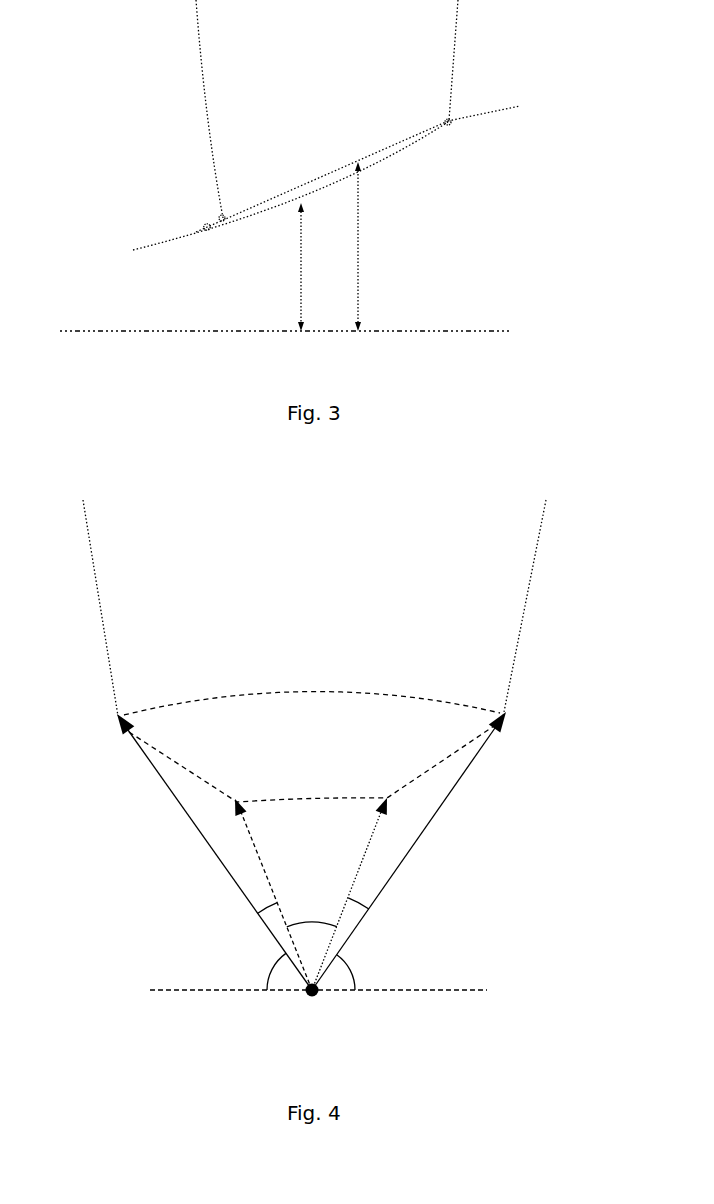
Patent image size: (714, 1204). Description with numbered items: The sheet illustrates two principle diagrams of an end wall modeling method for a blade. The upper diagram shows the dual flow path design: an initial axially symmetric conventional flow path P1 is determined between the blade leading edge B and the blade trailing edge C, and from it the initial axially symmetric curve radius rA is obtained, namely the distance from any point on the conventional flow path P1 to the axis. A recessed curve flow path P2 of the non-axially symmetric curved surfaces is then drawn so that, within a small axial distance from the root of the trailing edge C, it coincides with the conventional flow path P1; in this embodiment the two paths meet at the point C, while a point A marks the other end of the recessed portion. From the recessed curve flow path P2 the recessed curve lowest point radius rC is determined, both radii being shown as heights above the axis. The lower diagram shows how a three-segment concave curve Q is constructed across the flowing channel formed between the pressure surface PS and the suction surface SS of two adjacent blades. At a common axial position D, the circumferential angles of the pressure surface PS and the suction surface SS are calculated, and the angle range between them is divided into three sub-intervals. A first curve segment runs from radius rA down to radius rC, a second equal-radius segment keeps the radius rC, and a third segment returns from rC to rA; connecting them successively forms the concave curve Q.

In FIG. 3, the leading edge point of the camber line A is at (197, 219).
In FIG. 3, the blade leading edge B is at (216, 110).
In FIG. 3, the blade trailing edge C is at (458, 62).
In FIG. 3, the initial axially symmetric conventional flow path P1 is at (322, 176).
In FIG. 3, the recessed curve flow path P2 is at (397, 152).
In FIG. 3, the initial axially symmetric curve radius rA is at (372, 246).
In FIG. 4, the initial axially symmetric curve radius rA is at (311, 851).
In FIG. 3, the recessed curve lowest point radius rC is at (286, 267).
In FIG. 4, the recessed curve lowest point radius rC is at (311, 894).
In FIG. 4, the pressure surface PS is at (102, 610).
In FIG. 4, the suction surface SS is at (521, 632).
In FIG. 4, the concave curve Q is at (280, 800).
In FIG. 4, the axial position D is at (310, 1012).